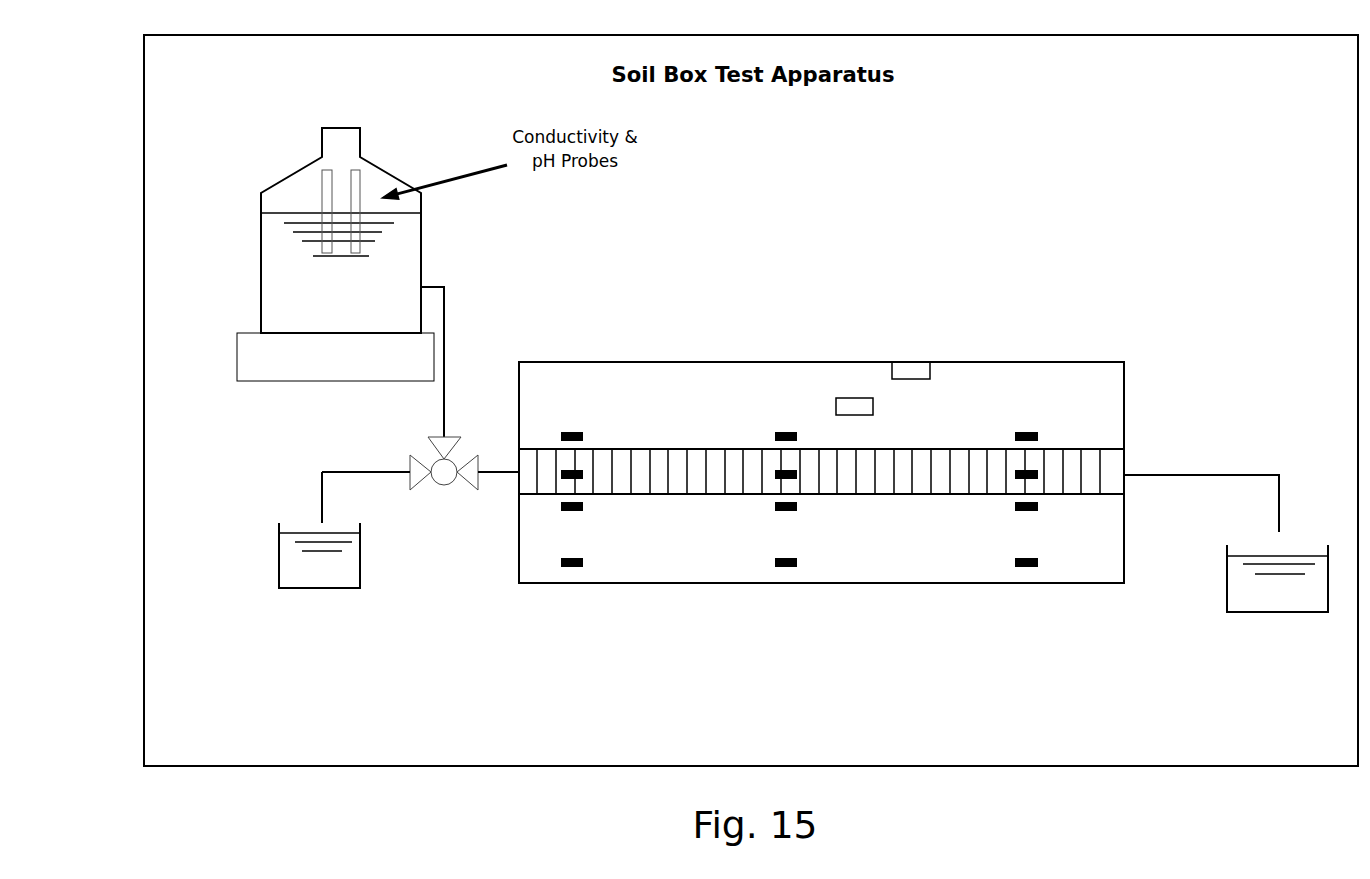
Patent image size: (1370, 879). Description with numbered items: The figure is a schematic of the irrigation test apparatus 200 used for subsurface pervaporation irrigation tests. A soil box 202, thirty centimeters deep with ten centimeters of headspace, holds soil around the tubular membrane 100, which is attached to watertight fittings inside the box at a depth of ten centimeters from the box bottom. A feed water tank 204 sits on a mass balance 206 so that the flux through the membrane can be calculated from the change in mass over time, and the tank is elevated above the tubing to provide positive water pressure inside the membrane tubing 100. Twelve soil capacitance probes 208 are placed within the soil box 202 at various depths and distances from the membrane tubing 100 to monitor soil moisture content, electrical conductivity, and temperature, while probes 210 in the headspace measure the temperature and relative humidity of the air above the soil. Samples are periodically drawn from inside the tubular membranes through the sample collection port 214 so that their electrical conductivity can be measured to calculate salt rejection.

The tubular membrane 100 is at (1094, 455).
The irrigation test apparatus 200 is at (806, 505).
The box 202 is at (1082, 585).
The feed water tank 204 is at (275, 241).
The mass balance 206 is at (275, 354).
The soil capacitance probes 208 is at (1007, 564).
The probes 210 is at (858, 378).
The sample collection port 214 is at (295, 550).